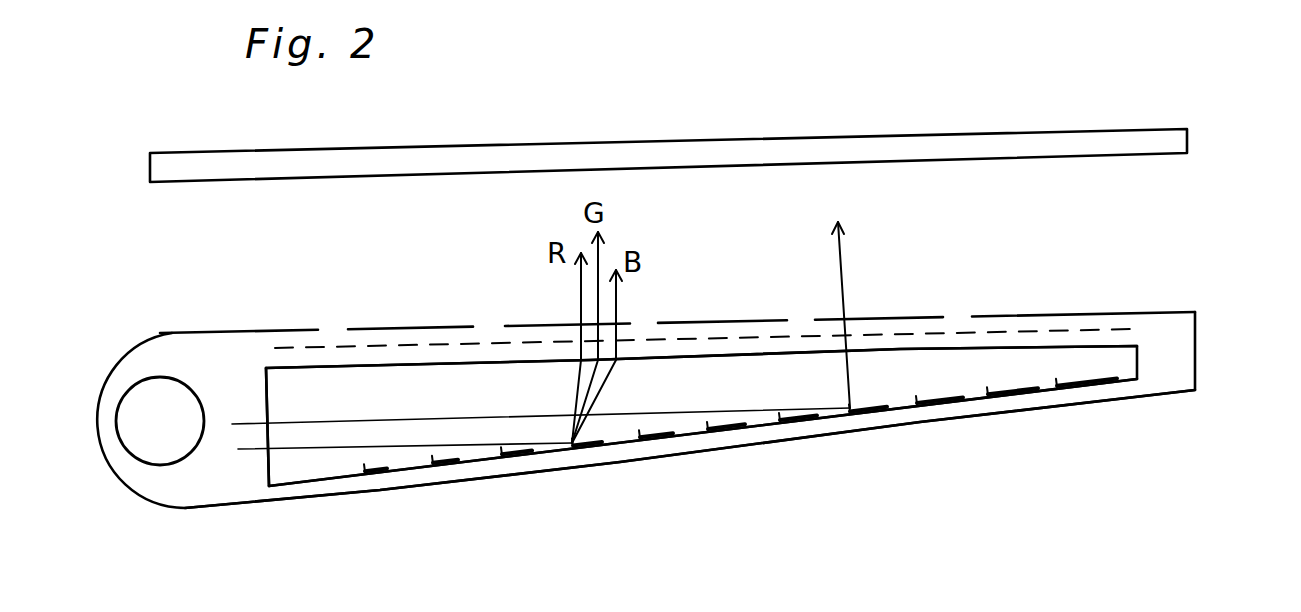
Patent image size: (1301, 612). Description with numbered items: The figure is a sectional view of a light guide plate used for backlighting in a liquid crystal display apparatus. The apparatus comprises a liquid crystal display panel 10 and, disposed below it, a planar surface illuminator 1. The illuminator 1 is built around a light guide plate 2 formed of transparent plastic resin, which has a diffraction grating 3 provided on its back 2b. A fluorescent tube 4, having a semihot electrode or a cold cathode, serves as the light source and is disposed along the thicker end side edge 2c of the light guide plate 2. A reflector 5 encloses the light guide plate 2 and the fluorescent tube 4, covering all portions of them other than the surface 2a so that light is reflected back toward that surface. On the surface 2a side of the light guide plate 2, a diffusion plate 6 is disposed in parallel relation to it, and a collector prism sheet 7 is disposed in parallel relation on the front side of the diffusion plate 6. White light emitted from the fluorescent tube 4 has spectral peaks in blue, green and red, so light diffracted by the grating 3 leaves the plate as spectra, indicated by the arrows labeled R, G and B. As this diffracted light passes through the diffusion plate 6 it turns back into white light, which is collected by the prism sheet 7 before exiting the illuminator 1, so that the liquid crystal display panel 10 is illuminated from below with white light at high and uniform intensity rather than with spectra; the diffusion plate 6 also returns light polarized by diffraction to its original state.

The planar surface illuminator 1 is at (1192, 278).
The light guide plate 2 is at (1150, 352).
The surface 2a is at (1047, 348).
The back 2b is at (1028, 392).
The thicker end side edge 2c is at (262, 397).
The diffraction grating 3 is at (613, 453).
The fluorescent tube 4 is at (137, 455).
The reflector 5 is at (758, 444).
The diffusion plate 6 is at (927, 333).
The collector prism sheet 7 is at (672, 320).
The liquid crystal display panel 10 is at (1118, 128).